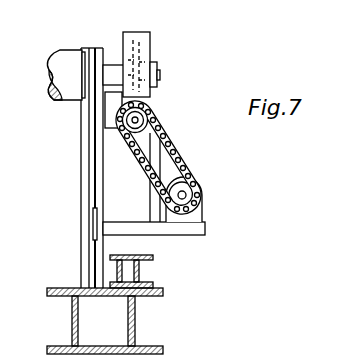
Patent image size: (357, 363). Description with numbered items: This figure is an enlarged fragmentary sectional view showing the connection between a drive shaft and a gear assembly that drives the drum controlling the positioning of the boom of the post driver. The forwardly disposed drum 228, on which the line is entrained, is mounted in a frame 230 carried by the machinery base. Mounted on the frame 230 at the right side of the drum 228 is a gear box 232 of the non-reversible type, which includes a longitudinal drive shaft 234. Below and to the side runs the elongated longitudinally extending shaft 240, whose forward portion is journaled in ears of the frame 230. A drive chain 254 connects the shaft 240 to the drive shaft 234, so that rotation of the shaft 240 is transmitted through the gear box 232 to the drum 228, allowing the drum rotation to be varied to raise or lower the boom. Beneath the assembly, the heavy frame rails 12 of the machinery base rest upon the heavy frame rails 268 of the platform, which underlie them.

The drum 228 is at (63, 62).
The frame 230 is at (83, 120).
The gear box 232 is at (148, 52).
The drive shaft 234 is at (137, 118).
The drive chain 254 is at (180, 145).
The shaft 240 is at (184, 194).
The frame rails 12 is at (140, 277).
The frame rails 268 is at (133, 332).